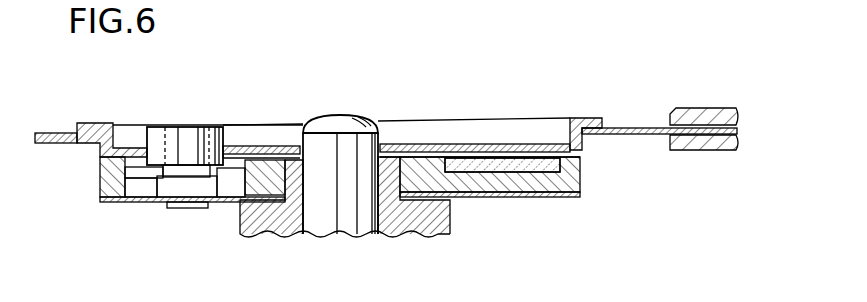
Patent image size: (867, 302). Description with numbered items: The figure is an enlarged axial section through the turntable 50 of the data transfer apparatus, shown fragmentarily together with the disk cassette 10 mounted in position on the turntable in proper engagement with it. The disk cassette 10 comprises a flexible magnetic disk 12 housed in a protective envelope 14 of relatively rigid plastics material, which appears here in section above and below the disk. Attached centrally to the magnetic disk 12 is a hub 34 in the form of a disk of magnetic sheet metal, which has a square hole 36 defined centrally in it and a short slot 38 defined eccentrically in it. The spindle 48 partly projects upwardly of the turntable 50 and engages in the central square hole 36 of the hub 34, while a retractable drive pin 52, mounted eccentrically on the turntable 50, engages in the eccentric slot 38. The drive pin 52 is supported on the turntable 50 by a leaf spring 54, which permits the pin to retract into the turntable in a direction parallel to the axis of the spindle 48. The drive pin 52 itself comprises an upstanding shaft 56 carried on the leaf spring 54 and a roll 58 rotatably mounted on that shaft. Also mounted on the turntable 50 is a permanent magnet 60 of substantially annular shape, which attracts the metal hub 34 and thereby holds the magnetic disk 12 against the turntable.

The disk cassette 10 is at (687, 108).
The magnetic disk 12 is at (645, 136).
The envelope 14 is at (717, 152).
The hub 34 is at (438, 143).
The square hole 36 is at (300, 145).
The slot 38 is at (146, 147).
The spindle 48 is at (367, 116).
The turntable 50 is at (588, 172).
The drive pin 52 is at (212, 127).
The leaf spring 54 is at (133, 203).
The shaft 56 is at (166, 127).
The roll 58 is at (157, 127).
The permanent magnet 60 is at (498, 156).